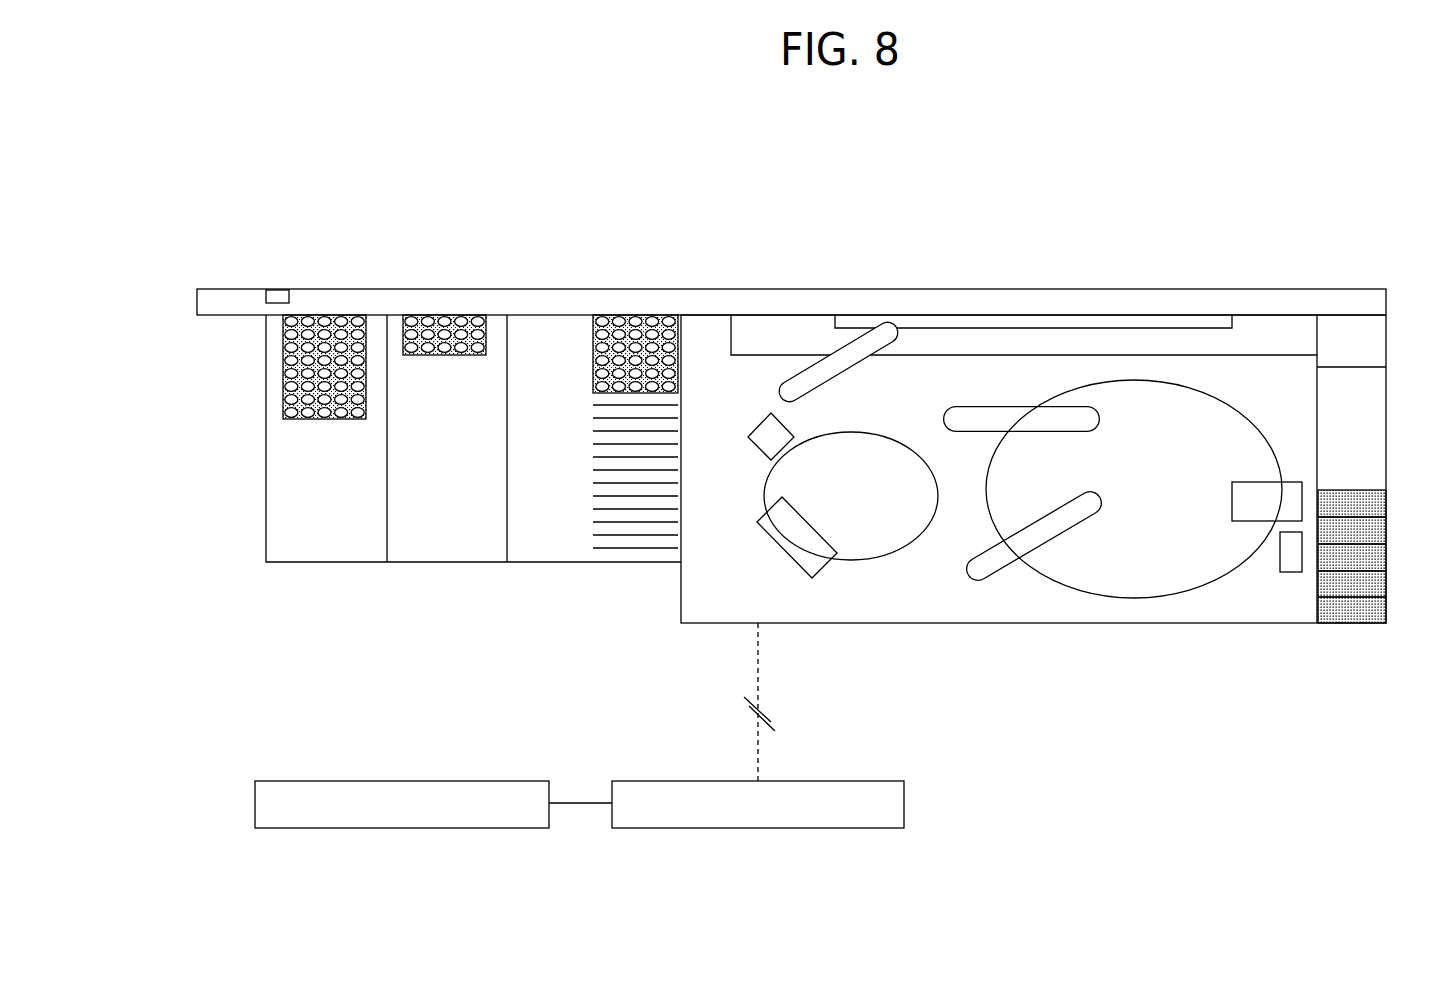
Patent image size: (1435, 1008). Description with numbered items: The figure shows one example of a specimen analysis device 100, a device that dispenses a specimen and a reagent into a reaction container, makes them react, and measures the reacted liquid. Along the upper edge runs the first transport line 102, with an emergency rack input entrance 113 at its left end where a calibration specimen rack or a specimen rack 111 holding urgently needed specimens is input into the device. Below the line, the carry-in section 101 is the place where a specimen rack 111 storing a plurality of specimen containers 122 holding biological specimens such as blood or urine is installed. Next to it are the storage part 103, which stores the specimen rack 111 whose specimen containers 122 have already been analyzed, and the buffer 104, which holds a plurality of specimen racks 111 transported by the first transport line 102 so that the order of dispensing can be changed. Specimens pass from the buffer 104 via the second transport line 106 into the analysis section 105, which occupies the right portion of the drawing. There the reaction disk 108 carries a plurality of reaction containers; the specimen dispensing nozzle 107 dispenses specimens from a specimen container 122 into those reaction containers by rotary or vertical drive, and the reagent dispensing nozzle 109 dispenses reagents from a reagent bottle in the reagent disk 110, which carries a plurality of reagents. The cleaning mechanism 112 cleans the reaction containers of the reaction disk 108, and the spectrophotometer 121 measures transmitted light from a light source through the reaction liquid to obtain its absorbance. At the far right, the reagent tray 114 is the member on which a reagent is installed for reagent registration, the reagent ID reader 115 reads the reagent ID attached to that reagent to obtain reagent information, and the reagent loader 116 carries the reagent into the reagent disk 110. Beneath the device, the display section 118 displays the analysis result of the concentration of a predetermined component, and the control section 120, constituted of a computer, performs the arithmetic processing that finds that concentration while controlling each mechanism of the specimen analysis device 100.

The specimen analysis device 100 is at (195, 168).
The carry-in section 101 is at (280, 535).
The first transport line 102 is at (450, 290).
The storage part 103 is at (467, 535).
The buffer 104 is at (577, 542).
The analysis section 105 is at (707, 623).
The second transport line 106 is at (765, 332).
The specimen dispensing nozzle 107 is at (818, 370).
The reaction disk 108 is at (855, 562).
The reagent dispensing nozzle 109 is at (1045, 413).
The reagent disk 110 is at (1203, 413).
The specimen rack 111 is at (300, 420).
The cleaning mechanism 112 is at (767, 523).
The emergency rack input entrance 113 is at (220, 303).
The reagent tray 114 is at (1353, 622).
The reagent ID reader 115 is at (1292, 570).
The reagent loader 116 is at (1257, 515).
The display section 118 is at (476, 828).
The control section 120 is at (833, 828).
The spectrophotometer 121 is at (773, 435).
The specimen container 122 is at (292, 385).